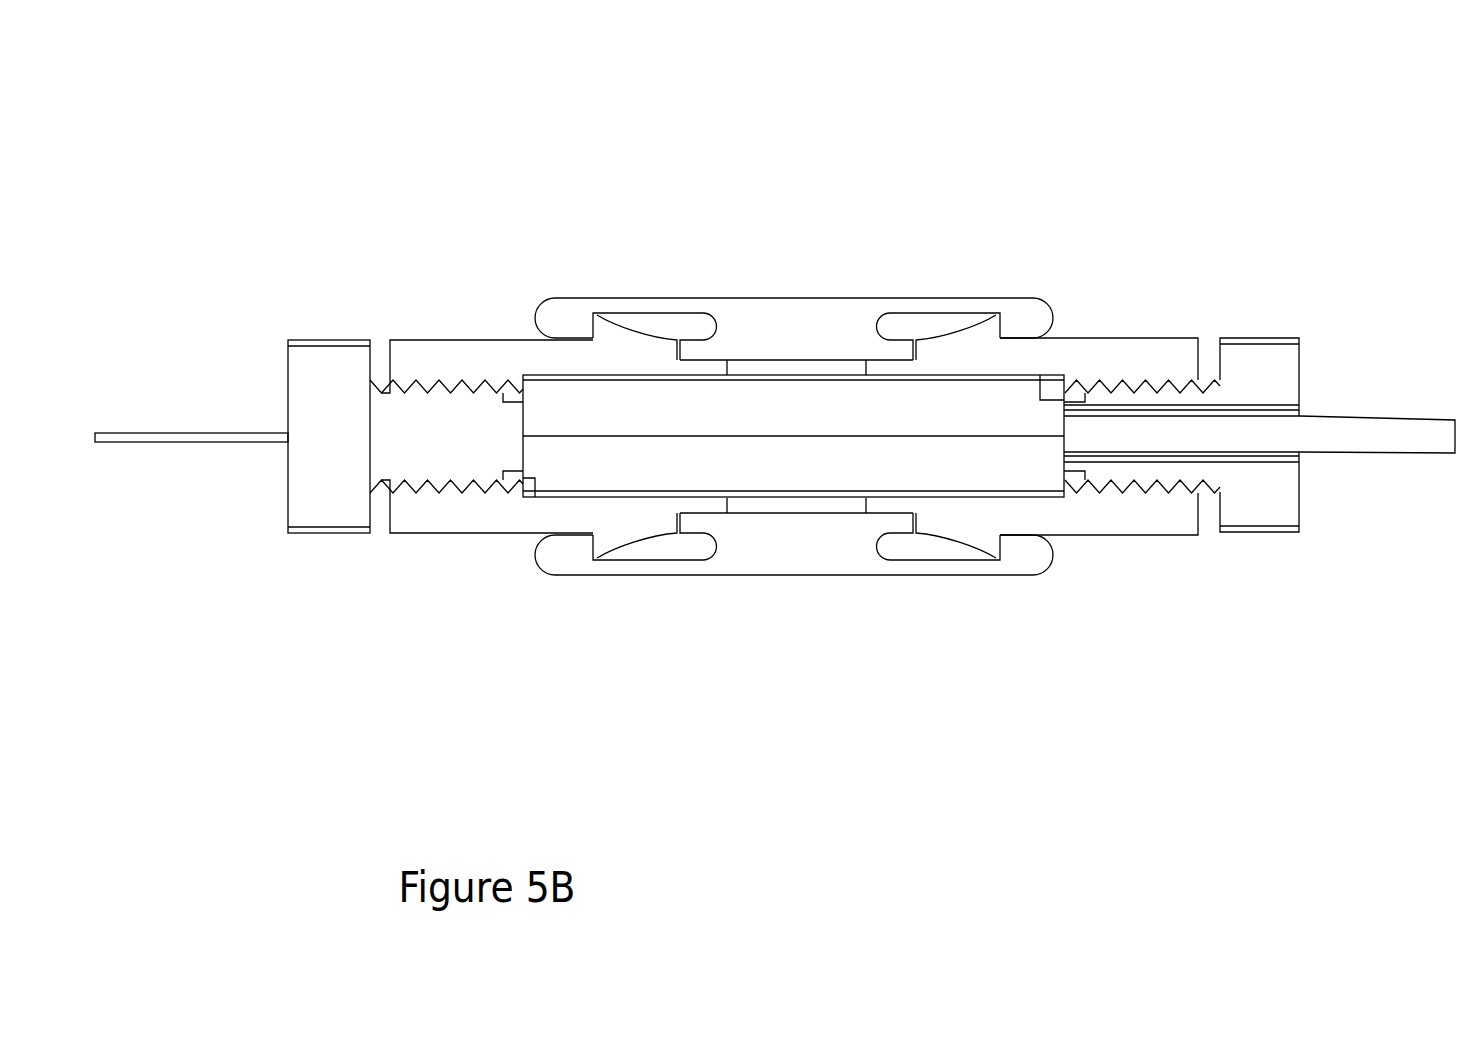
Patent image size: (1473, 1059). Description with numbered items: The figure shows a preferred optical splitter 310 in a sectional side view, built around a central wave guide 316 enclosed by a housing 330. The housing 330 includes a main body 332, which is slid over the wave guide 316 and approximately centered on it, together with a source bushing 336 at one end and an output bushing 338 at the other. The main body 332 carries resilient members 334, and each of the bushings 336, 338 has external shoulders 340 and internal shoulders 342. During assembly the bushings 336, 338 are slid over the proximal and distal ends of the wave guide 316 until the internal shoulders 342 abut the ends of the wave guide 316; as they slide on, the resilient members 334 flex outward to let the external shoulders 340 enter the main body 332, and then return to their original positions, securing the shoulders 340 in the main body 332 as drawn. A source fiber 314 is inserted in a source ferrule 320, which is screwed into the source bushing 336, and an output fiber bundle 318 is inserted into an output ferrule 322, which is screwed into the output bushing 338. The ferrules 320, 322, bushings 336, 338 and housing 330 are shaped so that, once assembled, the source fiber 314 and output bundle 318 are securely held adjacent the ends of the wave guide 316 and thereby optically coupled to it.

The optical splitter 310 is at (598, 121).
The source fiber 314 is at (158, 443).
The wave guide 316 is at (812, 377).
The output fiber bundle 318 is at (1413, 418).
The source ferrule 320 is at (327, 340).
The output ferrule 322 is at (1250, 338).
The housing 330 is at (718, 638).
The main body 332 is at (705, 298).
The resilient members 334 is at (565, 298).
The source bushing 336 is at (458, 340).
The output bushing 338 is at (1148, 338).
The external shoulders 340 is at (607, 553).
The internal shoulders 342 is at (1064, 398).